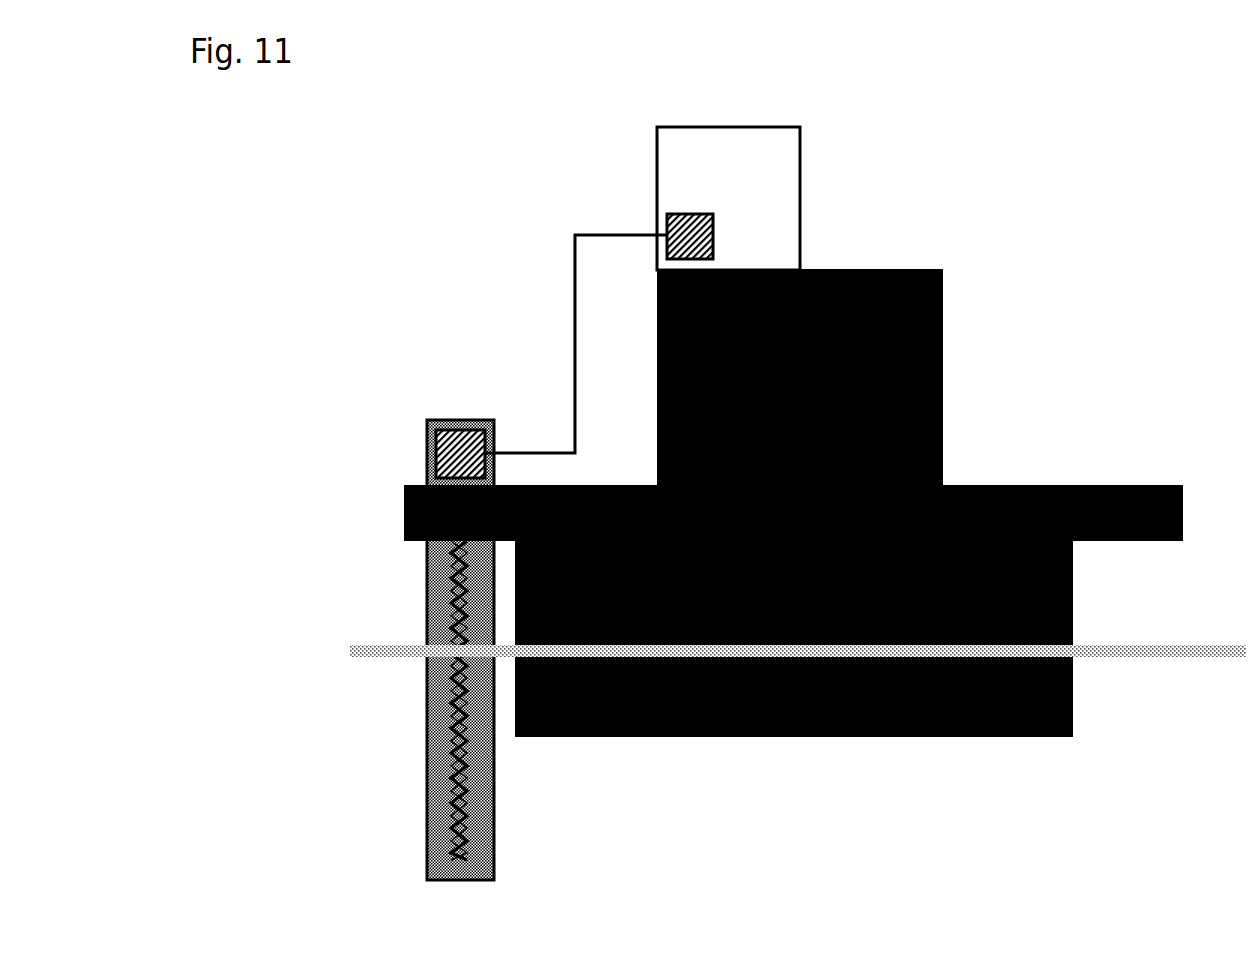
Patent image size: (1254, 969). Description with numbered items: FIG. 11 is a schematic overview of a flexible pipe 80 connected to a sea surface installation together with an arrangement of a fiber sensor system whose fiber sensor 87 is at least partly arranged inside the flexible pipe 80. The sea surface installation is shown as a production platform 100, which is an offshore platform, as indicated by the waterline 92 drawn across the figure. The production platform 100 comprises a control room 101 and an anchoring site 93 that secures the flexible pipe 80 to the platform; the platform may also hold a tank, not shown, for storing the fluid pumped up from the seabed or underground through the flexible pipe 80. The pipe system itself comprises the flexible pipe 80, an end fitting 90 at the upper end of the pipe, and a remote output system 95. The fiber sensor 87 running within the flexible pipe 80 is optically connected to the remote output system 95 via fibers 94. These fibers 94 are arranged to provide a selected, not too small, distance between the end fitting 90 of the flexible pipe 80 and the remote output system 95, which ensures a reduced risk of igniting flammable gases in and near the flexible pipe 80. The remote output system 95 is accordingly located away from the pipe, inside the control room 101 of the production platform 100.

The flexible pipe 80 is at (420, 738).
The fiber sensor 87 is at (428, 573).
The end fitting 90 is at (452, 432).
The waterline 92 is at (1163, 651).
The anchoring site 93 is at (397, 505).
The fibers 94 is at (560, 315).
The remote output system 95 is at (677, 225).
The production platform 100 is at (830, 458).
The control room 101 is at (747, 142).